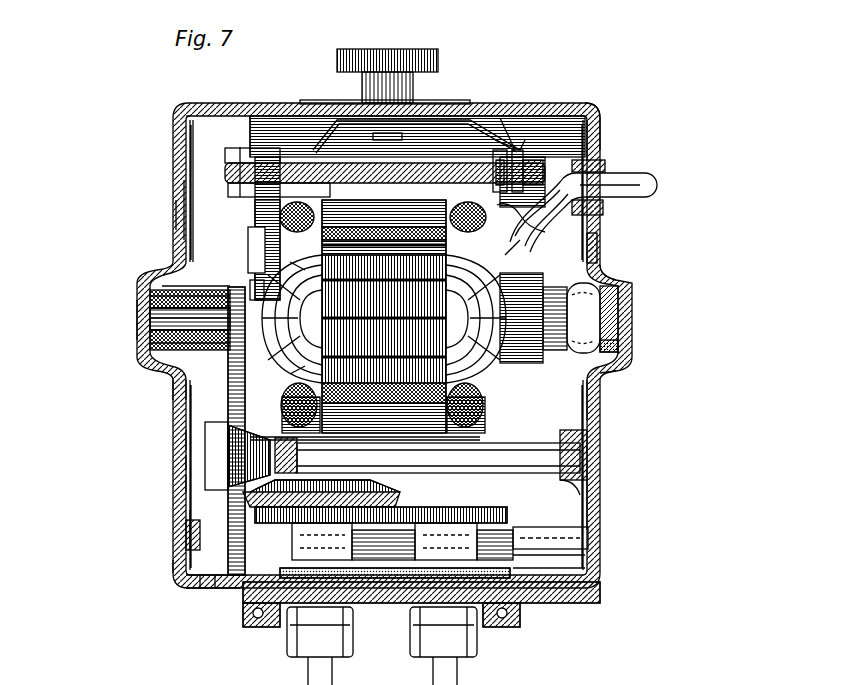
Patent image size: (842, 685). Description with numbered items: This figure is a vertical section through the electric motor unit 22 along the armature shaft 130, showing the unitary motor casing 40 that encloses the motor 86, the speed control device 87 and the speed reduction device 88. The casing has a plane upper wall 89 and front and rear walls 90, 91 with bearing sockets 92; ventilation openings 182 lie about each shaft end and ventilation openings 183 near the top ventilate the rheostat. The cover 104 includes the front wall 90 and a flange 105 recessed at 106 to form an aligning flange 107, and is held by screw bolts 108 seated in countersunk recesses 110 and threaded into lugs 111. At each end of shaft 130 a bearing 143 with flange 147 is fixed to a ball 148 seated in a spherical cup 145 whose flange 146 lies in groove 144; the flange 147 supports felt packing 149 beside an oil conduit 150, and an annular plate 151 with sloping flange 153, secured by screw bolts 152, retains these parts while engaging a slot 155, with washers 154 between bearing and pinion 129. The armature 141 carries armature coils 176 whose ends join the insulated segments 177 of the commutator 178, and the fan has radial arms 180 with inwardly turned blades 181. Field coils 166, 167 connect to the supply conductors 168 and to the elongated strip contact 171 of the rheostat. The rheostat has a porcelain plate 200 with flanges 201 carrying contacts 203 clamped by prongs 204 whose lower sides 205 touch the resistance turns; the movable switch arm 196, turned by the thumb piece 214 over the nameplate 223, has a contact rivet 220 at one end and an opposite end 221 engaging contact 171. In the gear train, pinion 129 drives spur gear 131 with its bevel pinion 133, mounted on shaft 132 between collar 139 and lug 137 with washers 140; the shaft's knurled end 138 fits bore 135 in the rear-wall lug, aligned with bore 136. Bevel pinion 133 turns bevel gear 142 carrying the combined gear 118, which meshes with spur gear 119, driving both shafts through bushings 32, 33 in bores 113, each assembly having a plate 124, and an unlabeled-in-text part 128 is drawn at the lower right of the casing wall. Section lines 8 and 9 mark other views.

The electric motor unit 22 is at (170, 108).
The ventilation openings 183 is at (180, 118).
The porcelain supporting plate 200 is at (190, 165).
The front wall 90 is at (180, 212).
The ventilation openings 182 is at (172, 205).
The annular plate 151 is at (602, 282).
The screw bolts 152 is at (152, 275).
The annular groove 144 is at (160, 285).
The ball-shaped metal member 148 is at (152, 300).
The slot 155 is at (150, 315).
The bearing 143 is at (607, 318).
The armature shaft 130 is at (150, 338).
The annular flange 147 is at (612, 340).
The oil conduit 150 is at (160, 360).
The felt packing 149 is at (613, 300).
The annular sheet metal member 145 is at (602, 376).
The bearing socket 92 is at (175, 385).
The outwardly extending flange 146 is at (182, 400).
The cover 104 is at (183, 440).
The lug 137 is at (183, 462).
The bore 136 is at (183, 485).
The washers 140 is at (180, 500).
The spur gear 131 is at (188, 520).
The bevel pinion 133 is at (188, 535).
The countersunk recesses 110 is at (184, 558).
The screw bolts 108 is at (182, 585).
The flange 105 is at (205, 592).
The speed reduction device 88 is at (205, 596).
The aligning flange 107 is at (210, 592).
The recess 106 is at (218, 600).
The bores 113 is at (258, 620).
The section line 9- 9 is at (218, 130).
The section line 8- 8 is at (101, 212).
The opposite end of contact arm 221 is at (262, 116).
The flanges 201 is at (250, 183).
The elongated strip contact 171 is at (283, 157).
The blades 181 is at (250, 178).
The radially extending arms 180 is at (258, 215).
The pinion 129 is at (248, 250).
The washers 154 is at (252, 290).
The inwardly sloping flange 153 is at (216, 431).
The nameplate 223 is at (337, 100).
The thumb piece 214 is at (403, 95).
The speed control device 87 is at (420, 143).
The movable switch arm 196 is at (502, 112).
The upper wall 89 is at (512, 112).
The contact rivet 220 is at (516, 150).
The rheostat contacts 203 is at (580, 130).
The lower sides of contacts 205 is at (592, 112).
The motor casing 40 is at (599, 125).
The prongs 204 is at (592, 152).
The supply conductors 168 is at (648, 187).
The coil 166 is at (522, 222).
The motor armature 141 is at (500, 225).
The insulated segments 177 is at (517, 252).
The commutator 178 is at (596, 262).
The rear wall 91 is at (592, 420).
The knurled end 138 is at (590, 455).
The bore 135 is at (592, 480).
The shaft 132 is at (590, 497).
The lugs 111 is at (588, 535).
The plate 124 is at (590, 556).
The base plate rim 128 is at (590, 578).
The armature coils 176 is at (492, 408).
The motor 86 is at (486, 425).
The coil 167 is at (490, 432).
The collar 139 is at (320, 480).
The bevel gear 142 is at (400, 500).
The spur gear 119 is at (482, 523).
The combined bevel and spur gear 118 is at (370, 530).
The bushing 32 is at (352, 600).
The bushing 33 is at (478, 625).